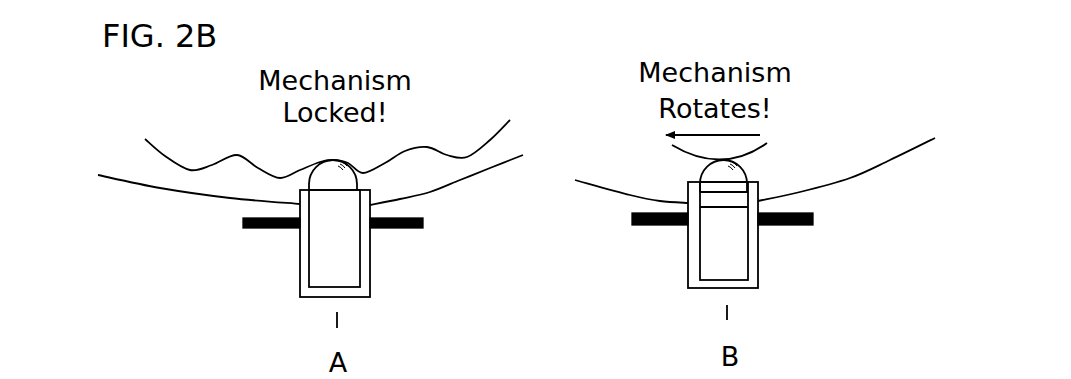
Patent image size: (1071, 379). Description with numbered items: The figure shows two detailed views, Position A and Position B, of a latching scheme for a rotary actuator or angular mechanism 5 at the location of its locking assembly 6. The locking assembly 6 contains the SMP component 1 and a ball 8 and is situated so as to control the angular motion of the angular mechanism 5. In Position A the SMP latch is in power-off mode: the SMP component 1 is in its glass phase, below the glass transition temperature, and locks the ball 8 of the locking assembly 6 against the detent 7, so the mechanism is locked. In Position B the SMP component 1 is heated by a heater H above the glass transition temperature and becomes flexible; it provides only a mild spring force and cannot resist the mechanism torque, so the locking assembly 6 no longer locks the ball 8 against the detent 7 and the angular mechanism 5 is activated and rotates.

The SMP component 1 is at (360, 277).
The rotary actuator or angular mechanism 5 is at (120, 188).
The locking assembly 6 is at (293, 260).
The detent 7 is at (234, 163).
The ball 8 is at (357, 178).
The heater H is at (763, 233).